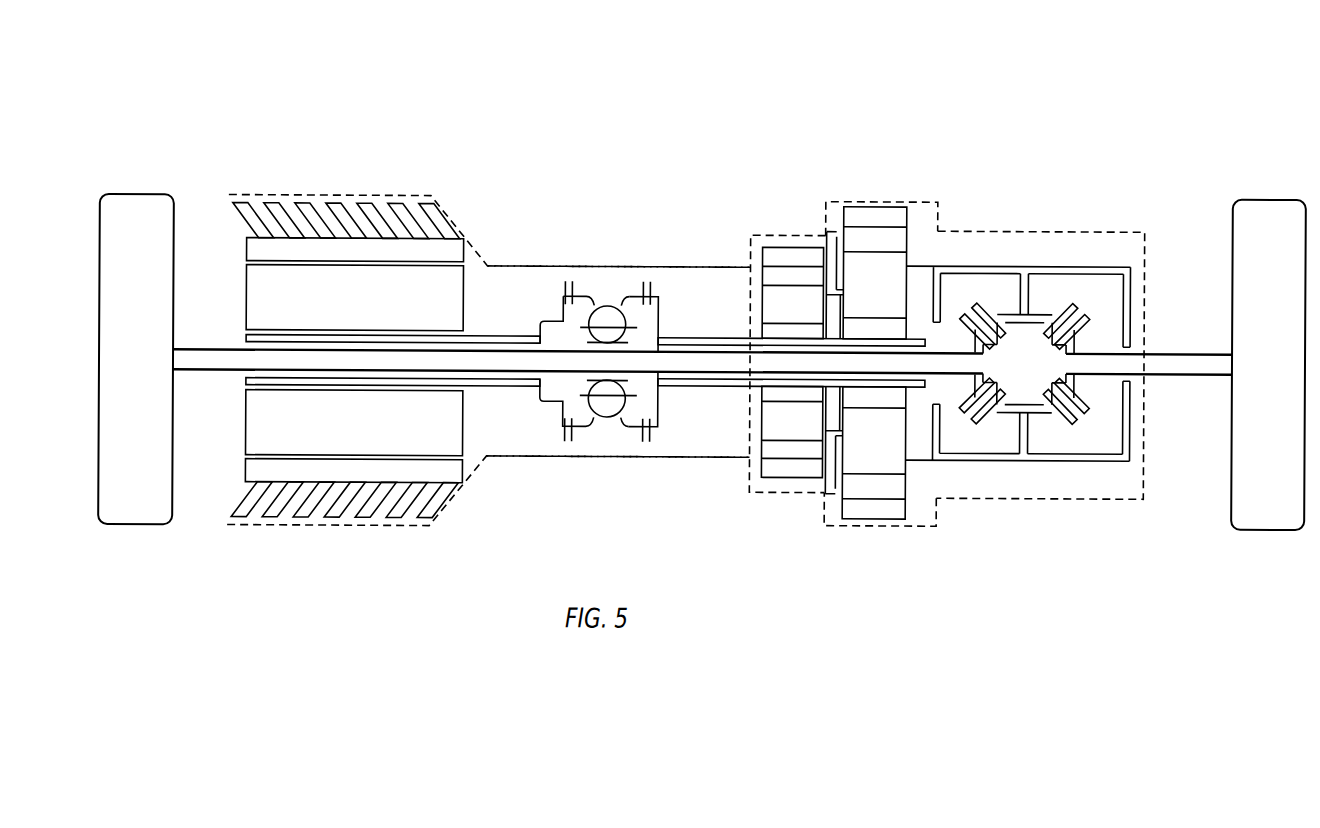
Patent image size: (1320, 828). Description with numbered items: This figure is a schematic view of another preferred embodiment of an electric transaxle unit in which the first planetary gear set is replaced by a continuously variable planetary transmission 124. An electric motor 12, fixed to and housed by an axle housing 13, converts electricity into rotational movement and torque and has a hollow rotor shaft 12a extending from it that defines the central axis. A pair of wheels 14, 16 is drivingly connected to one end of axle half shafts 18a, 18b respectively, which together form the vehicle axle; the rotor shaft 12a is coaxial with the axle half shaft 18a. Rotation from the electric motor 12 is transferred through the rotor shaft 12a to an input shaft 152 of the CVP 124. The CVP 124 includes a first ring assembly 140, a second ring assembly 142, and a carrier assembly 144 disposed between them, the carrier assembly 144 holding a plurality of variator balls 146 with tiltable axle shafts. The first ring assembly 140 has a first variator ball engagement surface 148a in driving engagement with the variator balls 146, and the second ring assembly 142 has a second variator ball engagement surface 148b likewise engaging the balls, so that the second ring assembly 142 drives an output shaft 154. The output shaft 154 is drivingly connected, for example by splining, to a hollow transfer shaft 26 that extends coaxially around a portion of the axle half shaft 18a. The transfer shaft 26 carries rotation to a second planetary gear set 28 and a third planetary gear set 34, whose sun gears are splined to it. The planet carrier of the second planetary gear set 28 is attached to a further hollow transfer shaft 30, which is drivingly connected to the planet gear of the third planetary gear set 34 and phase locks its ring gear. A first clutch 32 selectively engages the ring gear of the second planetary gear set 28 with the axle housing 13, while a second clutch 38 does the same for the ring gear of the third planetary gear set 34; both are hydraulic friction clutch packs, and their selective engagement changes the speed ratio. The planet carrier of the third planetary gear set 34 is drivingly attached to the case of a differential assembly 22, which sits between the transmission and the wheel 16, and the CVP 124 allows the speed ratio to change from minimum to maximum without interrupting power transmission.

The electric motor 12 is at (329, 162).
The hollow rotor shaft 12a is at (483, 343).
The axle housing 13 is at (256, 196).
The wheel 14 is at (136, 196).
The wheel 16 is at (1264, 199).
The axle half shaft 18a is at (215, 350).
The axle half shaft 18b is at (1181, 352).
The differential assembly 22 is at (1026, 224).
The transfer shaft 26 is at (730, 334).
The second planetary gear set 28 is at (781, 222).
The transfer shaft 30 is at (833, 495).
The first clutch 32 is at (774, 479).
The third planetary gear set 34 is at (875, 193).
The second clutch 38 is at (883, 519).
The continuously variable planetary transmission 124 is at (632, 244).
The first ring assembly 140 is at (561, 260).
The second ring assembly 142 is at (653, 460).
The carrier assembly 144 is at (663, 420).
The variator balls 146 is at (607, 304).
The first variator ball engagement surface 148a is at (593, 297).
The second variator ball engagement surface 148b is at (623, 300).
The input shaft 152 is at (541, 318).
The output shaft 154 is at (660, 323).